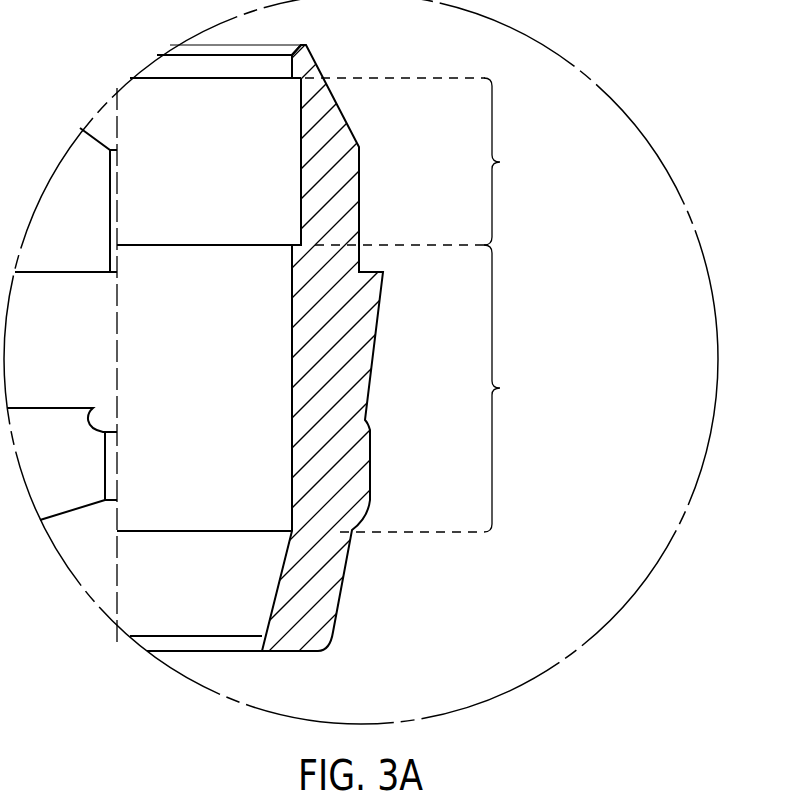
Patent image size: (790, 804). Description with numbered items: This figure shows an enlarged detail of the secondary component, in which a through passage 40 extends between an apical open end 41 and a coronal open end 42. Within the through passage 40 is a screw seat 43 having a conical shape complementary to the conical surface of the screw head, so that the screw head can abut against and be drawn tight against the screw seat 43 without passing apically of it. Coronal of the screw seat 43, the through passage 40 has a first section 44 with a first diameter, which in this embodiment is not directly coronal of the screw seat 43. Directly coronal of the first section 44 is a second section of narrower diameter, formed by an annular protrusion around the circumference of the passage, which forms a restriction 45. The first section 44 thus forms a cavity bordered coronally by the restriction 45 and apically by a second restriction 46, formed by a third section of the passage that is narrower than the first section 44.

The through passage 40 is at (224, 108).
The apical open end 41 is at (238, 652).
The coronal open end 42 is at (303, 46).
The screw seat 43 is at (300, 578).
The first section 44 is at (415, 161).
The restriction 45 is at (303, 66).
The second restriction 46 is at (433, 388).